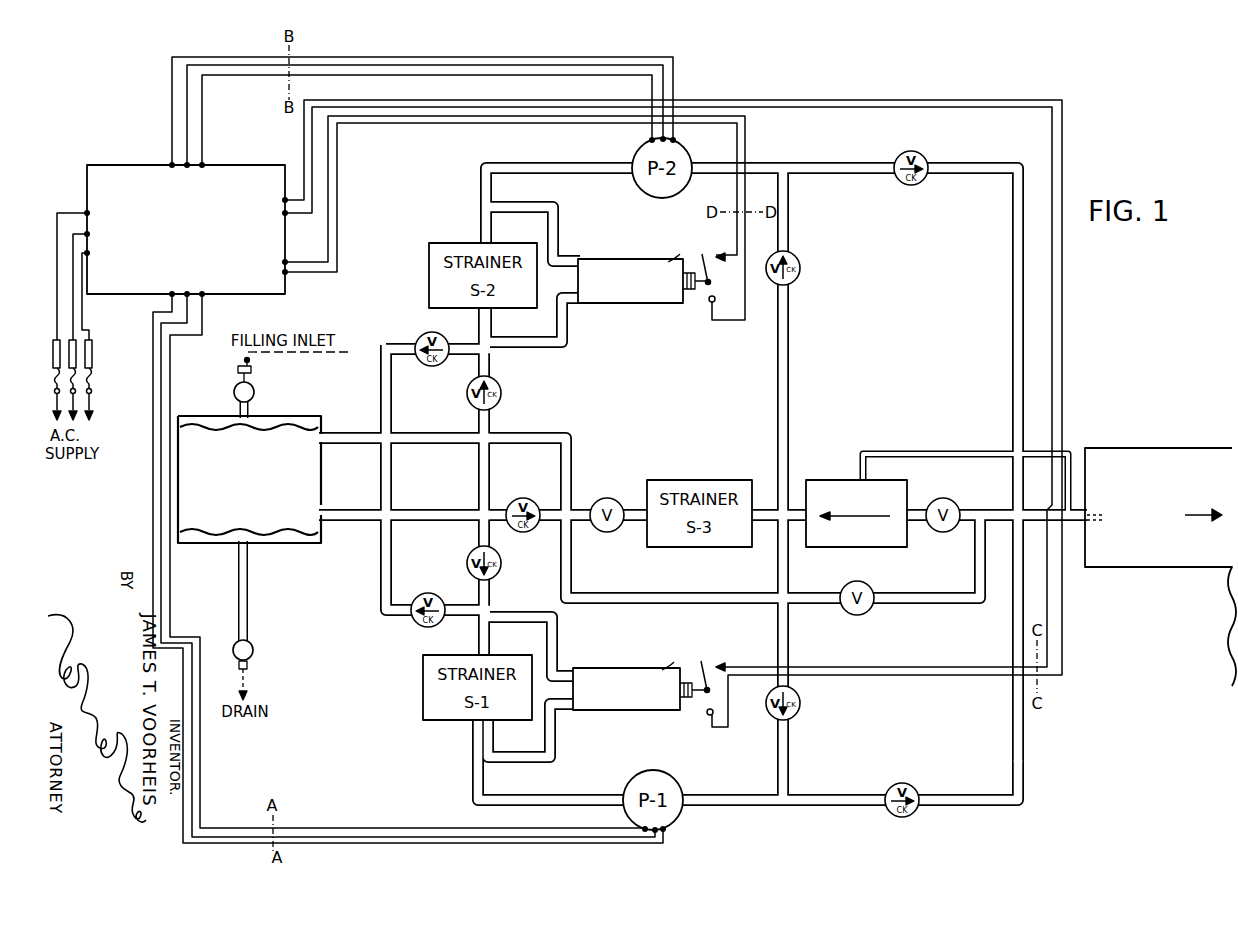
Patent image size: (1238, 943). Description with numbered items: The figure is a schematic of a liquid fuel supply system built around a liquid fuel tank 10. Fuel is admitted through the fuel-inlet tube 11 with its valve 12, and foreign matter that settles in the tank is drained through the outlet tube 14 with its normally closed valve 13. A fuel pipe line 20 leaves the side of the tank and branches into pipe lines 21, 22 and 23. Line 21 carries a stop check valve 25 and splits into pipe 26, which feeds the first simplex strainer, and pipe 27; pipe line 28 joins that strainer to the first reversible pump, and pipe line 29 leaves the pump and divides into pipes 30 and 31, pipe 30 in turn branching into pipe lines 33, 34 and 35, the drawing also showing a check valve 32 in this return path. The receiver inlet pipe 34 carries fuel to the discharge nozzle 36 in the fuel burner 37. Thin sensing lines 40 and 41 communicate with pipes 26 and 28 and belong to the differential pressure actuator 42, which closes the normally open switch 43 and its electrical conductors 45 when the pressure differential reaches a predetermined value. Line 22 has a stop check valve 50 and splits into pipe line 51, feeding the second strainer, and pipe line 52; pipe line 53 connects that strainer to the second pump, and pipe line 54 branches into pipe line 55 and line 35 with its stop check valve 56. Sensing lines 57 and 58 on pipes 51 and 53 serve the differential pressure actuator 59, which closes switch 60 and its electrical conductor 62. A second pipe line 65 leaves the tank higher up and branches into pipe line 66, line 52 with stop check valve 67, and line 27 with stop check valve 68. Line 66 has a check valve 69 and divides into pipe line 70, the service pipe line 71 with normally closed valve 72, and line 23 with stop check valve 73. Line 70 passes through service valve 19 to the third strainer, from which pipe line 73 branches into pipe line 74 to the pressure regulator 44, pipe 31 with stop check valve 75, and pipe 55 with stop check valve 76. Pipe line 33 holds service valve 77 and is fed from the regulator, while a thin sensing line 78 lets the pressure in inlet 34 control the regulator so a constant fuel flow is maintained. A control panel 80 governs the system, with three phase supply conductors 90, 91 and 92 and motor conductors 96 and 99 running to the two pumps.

The liquid fuel tank 10 is at (294, 547).
The liquid fuel-inlet tube 11 is at (252, 373).
The valve 12 is at (254, 394).
The normally closed valve 13 is at (253, 659).
The outlet tube 14 is at (251, 592).
The manually operable normally open service valve 19 is at (616, 498).
The fuel pipe line 20 is at (340, 442).
The pipe line 21 is at (390, 475).
The pipe line 22 is at (393, 395).
The pipe line 23 is at (432, 444).
The stop check valve 25 is at (412, 622).
The pipe line 26 is at (488, 634).
The pipe line 27 is at (488, 601).
The pipe line 28 is at (474, 744).
The pipe line 29 is at (714, 806).
The pipe 30 is at (1024, 758).
The pipe 31 is at (790, 780).
The check valve 32 is at (915, 791).
The pipe line 33 is at (998, 523).
The receiver inlet pipe 34 is at (1031, 527).
The pipe line 35 is at (871, 165).
The discharge nozzle or outlet 36 is at (1104, 514).
The fuel burner or receiver 37 is at (1208, 452).
The fluid pressure sensing line 40 is at (555, 624).
The fluid pressure sensing line 41 is at (556, 754).
The differential pressure actuator 42 is at (644, 711).
The normally open switch 43 is at (714, 663).
The pressure regulator 44 is at (822, 550).
The electrical conductors 45 is at (302, 148).
The stop check valve 50 is at (422, 337).
The pipe line 51 is at (504, 336).
The pipe line 52 is at (509, 422).
The pipe line 53 is at (478, 166).
The pipe line 54 is at (760, 166).
The pipe line 55 is at (796, 225).
The stop check valve 56 is at (927, 162).
The fuel pressure sensing line 57 is at (566, 334).
The fuel pressure sensing line 58 is at (504, 209).
The differential pressure actuator 59 is at (656, 304).
The normally open switch 60 is at (704, 256).
The electrical conductor 62 is at (298, 242).
The pipe line 65 is at (419, 516).
The pipe line 66 is at (492, 521).
The stop check valve 67 is at (502, 396).
The stop check valve 68 is at (501, 564).
The check valve 69 is at (521, 499).
The pipe line 70 is at (582, 508).
The service pipe line 71 is at (671, 600).
The manually operable normally closed valve 72 is at (870, 593).
The pipe line 73 is at (762, 498).
The pipe line 74 is at (799, 496).
The stop check valve 75 is at (800, 706).
The stop check valve 76 is at (802, 268).
The manually operable normally open service valve 77 is at (970, 497).
The fluid sensing line 78 is at (946, 451).
The control panel 80 is at (285, 294).
The electrical conductor 90 is at (94, 404).
The electrical conductor 91 is at (86, 424).
The electrical conductor 92 is at (48, 392).
The electrical conductors 96 is at (200, 785).
The electrical conductors 99 is at (202, 140).